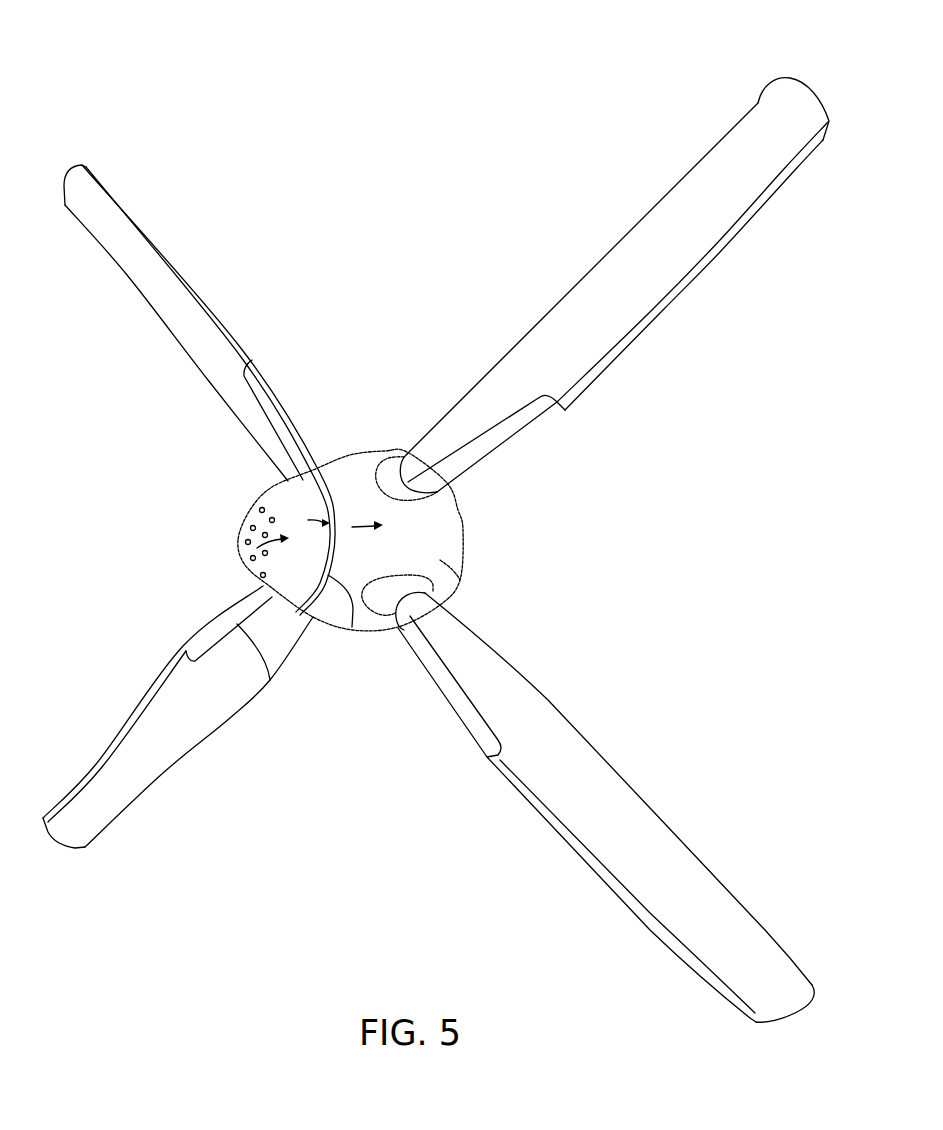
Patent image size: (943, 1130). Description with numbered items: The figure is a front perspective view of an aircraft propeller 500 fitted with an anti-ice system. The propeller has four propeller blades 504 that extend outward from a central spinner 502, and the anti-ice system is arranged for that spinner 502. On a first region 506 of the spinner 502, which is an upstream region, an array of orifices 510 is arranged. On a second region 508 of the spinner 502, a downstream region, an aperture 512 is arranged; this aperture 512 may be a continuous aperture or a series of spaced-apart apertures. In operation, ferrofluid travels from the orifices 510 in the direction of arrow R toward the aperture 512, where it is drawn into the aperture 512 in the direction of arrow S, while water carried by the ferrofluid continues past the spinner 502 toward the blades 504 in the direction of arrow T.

The aircraft propeller 500 is at (403, 101).
The spinner 502 is at (472, 515).
The propeller blades 504 is at (190, 312).
The first region 506 is at (233, 537).
The second region 508 is at (441, 551).
The array of orifices 510 is at (269, 520).
The aperture 512 is at (352, 632).